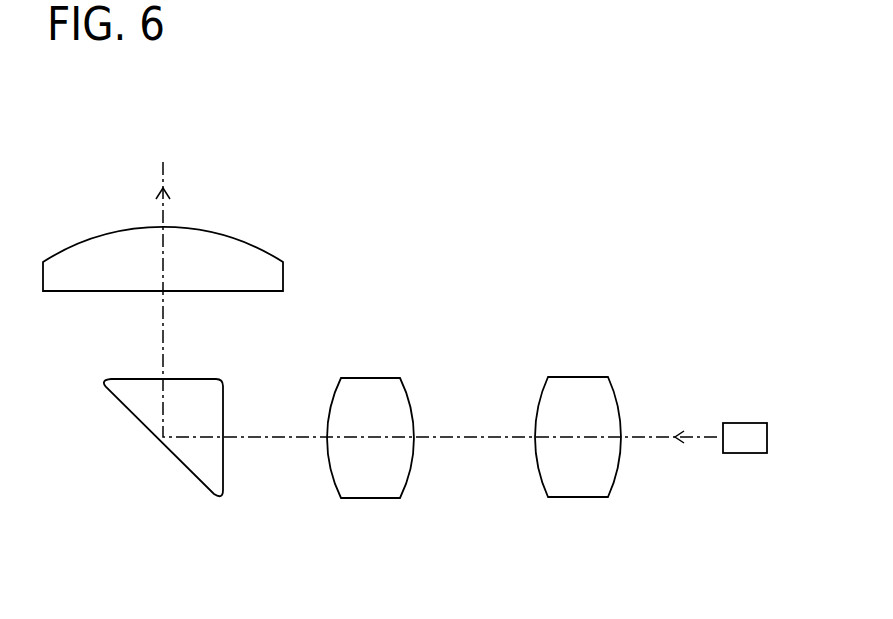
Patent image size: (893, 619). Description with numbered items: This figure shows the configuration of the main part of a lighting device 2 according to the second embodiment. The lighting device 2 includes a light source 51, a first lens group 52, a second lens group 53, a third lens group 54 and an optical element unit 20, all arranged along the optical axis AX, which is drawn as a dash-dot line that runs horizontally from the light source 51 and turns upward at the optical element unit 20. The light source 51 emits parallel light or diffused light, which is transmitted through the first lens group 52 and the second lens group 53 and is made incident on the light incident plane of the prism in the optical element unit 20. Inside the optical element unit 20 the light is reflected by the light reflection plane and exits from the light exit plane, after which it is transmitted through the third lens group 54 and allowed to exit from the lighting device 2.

The lighting device 2 is at (628, 238).
The optical element unit 20 is at (153, 465).
The light source 51 is at (745, 453).
The first lens group 52 is at (578, 497).
The second lens group 53 is at (368, 498).
The third lens group 54 is at (284, 273).
The optical axis AX is at (434, 289).